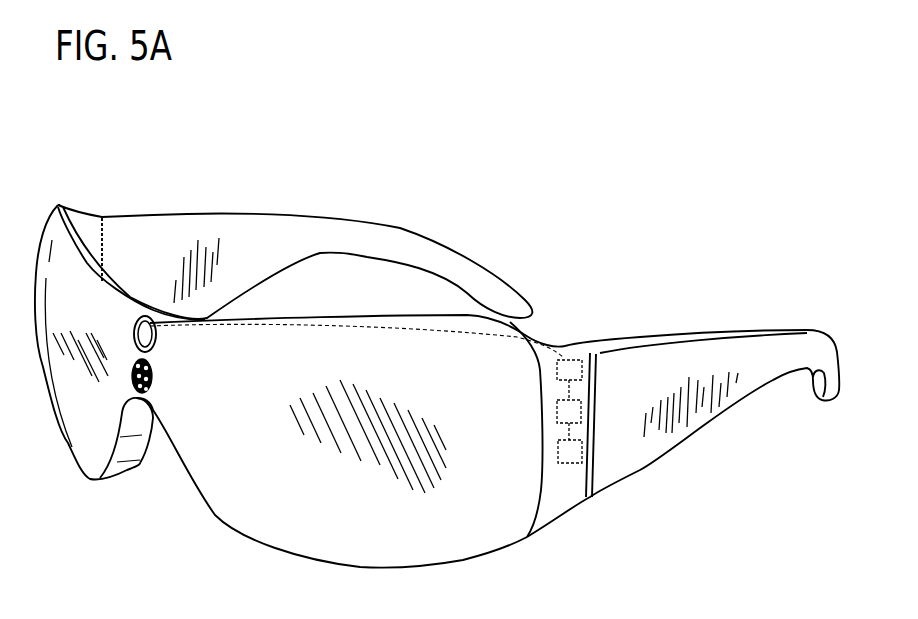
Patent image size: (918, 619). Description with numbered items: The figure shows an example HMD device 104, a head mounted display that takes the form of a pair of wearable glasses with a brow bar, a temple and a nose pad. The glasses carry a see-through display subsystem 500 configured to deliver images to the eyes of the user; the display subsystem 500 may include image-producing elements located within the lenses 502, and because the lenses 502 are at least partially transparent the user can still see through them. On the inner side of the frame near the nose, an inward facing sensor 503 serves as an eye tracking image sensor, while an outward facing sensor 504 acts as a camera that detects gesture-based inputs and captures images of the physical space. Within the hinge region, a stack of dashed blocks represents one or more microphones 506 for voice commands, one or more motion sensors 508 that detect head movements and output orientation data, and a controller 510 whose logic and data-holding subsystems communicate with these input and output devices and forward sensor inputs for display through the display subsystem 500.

The HMD device 104 is at (474, 131).
The see-through display subsystem 500 is at (232, 508).
The lenses 502 is at (463, 535).
The inward facing sensor 503 is at (162, 385).
The outward facing sensor 504 is at (167, 337).
The microphones 506 is at (582, 446).
The motion sensors 508 is at (580, 412).
The controller 510 is at (568, 360).